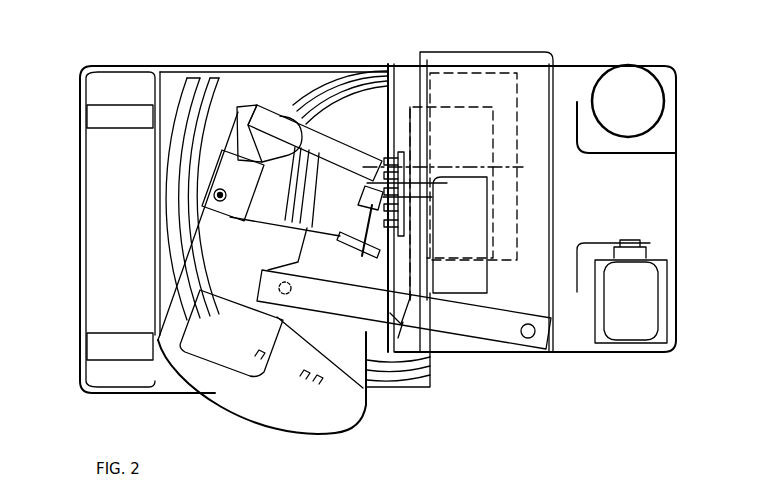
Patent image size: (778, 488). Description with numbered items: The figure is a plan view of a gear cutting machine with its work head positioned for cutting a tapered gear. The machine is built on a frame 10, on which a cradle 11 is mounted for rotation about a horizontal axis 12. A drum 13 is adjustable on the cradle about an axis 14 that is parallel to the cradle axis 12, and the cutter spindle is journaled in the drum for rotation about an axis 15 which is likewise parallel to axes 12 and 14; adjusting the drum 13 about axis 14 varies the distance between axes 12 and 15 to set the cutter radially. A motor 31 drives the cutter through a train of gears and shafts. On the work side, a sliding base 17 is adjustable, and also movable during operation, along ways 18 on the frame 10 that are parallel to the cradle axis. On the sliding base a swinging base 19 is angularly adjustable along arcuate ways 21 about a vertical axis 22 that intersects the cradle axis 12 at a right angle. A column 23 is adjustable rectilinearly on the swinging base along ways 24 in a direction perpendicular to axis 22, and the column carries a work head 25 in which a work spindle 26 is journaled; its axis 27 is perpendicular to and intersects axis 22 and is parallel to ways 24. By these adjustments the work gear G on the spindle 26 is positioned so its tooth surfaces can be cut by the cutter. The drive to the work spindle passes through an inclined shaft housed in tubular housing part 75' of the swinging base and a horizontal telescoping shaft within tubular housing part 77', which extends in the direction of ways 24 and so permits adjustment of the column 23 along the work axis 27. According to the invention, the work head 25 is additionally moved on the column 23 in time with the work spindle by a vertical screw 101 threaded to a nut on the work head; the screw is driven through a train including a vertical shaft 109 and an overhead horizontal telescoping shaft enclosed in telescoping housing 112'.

The frame 10 is at (448, 352).
The cradle 11 is at (395, 78).
The horizontal axis 12 is at (443, 170).
The drum 13 is at (463, 104).
The drum axis 14 is at (440, 183).
The cutter spindle axis 15 is at (428, 197).
The sliding base 17 is at (269, 125).
The ways 18 is at (104, 120).
The swinging base 19 is at (369, 285).
The arcuate ways 21 is at (205, 78).
The vertical axis 22 is at (386, 168).
The column 23 is at (260, 250).
The ways 24 is at (303, 172).
The work head 25 is at (404, 309).
The work spindle 26 is at (342, 244).
The work axis 27 is at (364, 232).
The motor 31 is at (647, 297).
The tubular housing part 75' is at (315, 135).
The tubular housing part 77' is at (230, 213).
The vertical screw 101 is at (292, 291).
The vertical shaft 109 is at (527, 324).
The telescoping housing 112' is at (396, 336).
The work gear G is at (367, 192).